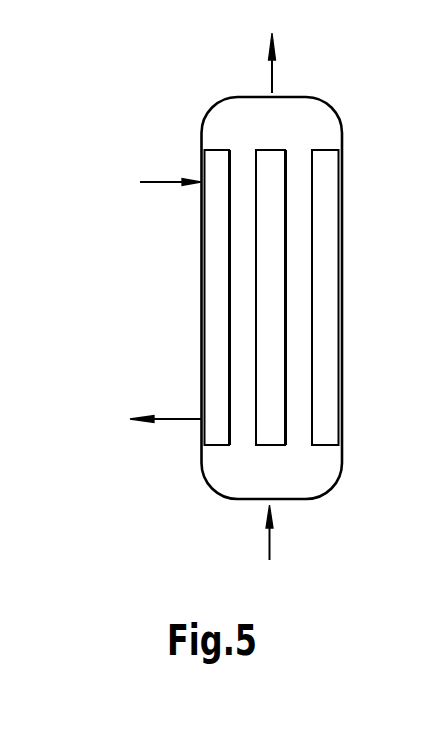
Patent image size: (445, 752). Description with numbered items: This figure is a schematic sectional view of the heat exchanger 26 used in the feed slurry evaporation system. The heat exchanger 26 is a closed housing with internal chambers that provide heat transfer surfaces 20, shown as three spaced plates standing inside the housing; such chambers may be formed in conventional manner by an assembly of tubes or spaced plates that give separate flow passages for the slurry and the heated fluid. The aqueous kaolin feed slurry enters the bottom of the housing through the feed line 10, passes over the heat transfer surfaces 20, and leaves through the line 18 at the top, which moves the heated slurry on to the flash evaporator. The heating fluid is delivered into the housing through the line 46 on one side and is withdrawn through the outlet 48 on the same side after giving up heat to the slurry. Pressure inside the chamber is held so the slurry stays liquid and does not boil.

The feed line 10 is at (275, 532).
The heated slurry line 18 is at (278, 76).
The heat transfer surfaces 20 is at (309, 166).
The heat exchanger 26 is at (343, 124).
The heating fluid line 46 is at (152, 182).
The permeate stream outlet 48 is at (163, 418).